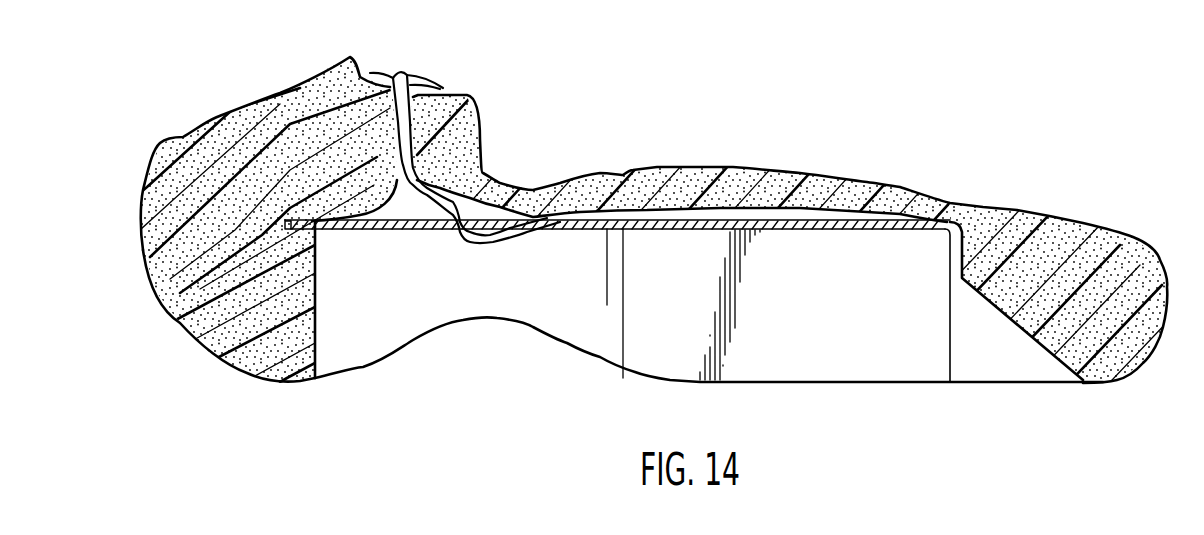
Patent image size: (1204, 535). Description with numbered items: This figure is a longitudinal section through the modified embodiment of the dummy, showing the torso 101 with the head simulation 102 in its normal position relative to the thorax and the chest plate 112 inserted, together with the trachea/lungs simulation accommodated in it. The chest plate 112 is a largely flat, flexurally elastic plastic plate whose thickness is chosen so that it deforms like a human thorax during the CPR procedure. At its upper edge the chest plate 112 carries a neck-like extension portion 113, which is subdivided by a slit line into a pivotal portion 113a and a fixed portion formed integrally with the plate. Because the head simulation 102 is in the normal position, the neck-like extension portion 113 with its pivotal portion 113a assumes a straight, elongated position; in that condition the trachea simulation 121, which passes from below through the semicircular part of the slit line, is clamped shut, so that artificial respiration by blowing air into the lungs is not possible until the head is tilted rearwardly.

The torso 101 is at (998, 203).
The head simulation 102 is at (212, 343).
The chest plate 112 is at (773, 230).
The neck-like extension portion 113 is at (466, 249).
The pivotal portion 113a is at (343, 230).
The trachea simulation 121 is at (423, 205).